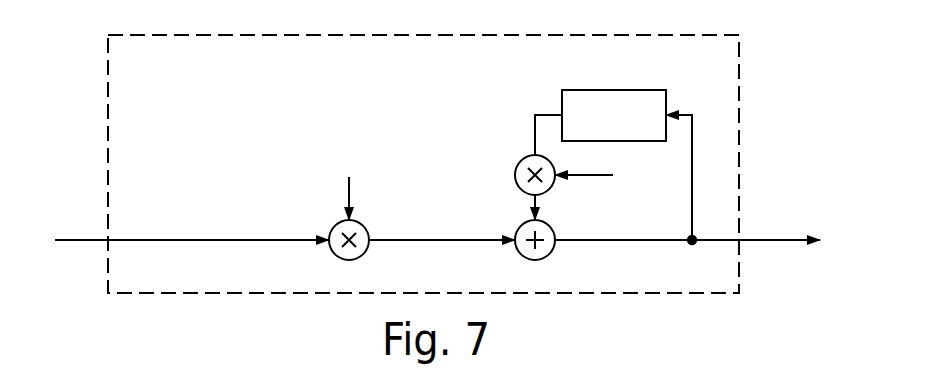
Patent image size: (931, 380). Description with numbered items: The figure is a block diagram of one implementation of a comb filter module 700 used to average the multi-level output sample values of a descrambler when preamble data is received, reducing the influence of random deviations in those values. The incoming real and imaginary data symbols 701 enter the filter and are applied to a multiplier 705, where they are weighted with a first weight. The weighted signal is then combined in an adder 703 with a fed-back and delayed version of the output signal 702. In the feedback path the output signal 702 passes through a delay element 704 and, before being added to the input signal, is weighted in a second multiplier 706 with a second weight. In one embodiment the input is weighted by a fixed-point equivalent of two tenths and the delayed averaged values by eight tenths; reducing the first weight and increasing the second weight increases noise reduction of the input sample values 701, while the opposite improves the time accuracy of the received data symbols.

The filter 700 is at (739, 57).
The incoming data symbols 701 is at (68, 240).
The output signal 702 is at (785, 240).
The adder 703 is at (521, 251).
The delay element 704 is at (636, 90).
The multiplier 705 is at (333, 252).
The multiplier 706 is at (521, 188).